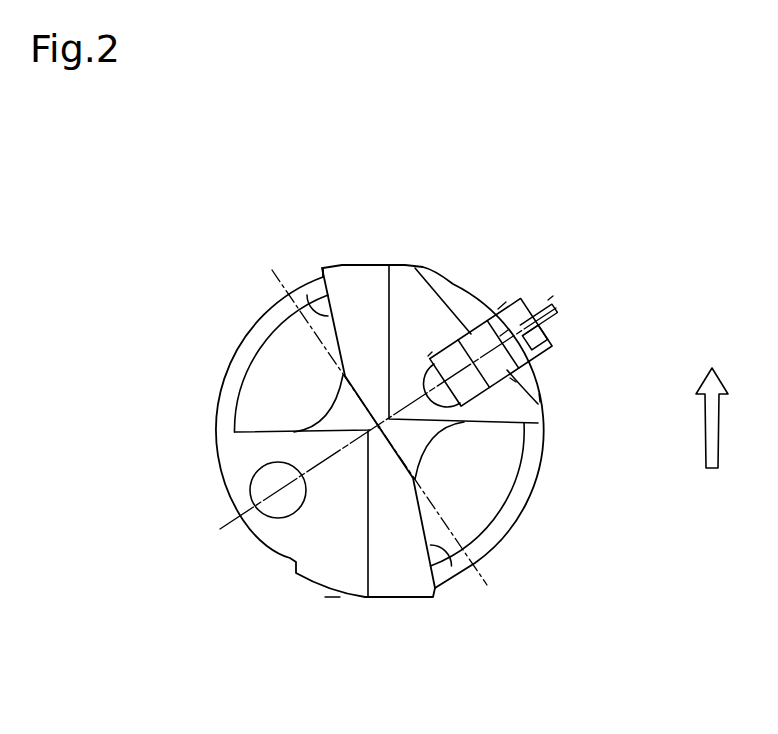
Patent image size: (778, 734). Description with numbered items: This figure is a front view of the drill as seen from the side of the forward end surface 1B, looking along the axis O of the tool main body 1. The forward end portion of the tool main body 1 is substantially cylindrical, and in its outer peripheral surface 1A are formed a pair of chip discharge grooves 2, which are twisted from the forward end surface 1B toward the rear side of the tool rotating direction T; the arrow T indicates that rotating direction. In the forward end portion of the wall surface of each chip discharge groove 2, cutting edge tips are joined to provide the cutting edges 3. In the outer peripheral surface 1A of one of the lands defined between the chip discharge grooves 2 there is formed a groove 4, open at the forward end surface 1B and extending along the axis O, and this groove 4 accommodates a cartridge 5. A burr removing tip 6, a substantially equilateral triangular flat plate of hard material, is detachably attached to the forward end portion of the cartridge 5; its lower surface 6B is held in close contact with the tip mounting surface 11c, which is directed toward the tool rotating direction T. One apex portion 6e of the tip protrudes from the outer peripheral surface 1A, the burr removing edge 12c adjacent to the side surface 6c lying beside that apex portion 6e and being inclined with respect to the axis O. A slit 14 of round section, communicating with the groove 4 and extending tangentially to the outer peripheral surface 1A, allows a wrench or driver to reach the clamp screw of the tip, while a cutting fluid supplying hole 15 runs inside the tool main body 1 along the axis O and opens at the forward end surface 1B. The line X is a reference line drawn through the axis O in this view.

The tool main body 1 is at (211, 292).
The outer peripheral surface 1A is at (556, 398).
The forward end surface 1B is at (331, 603).
The chip discharge grooves 2 is at (270, 384).
The cutting edges 3 is at (322, 268).
The groove 4 is at (518, 384).
The cartridge 5 is at (418, 338).
The burr removing tip 6 is at (559, 322).
The lower surface 6B is at (587, 346).
The side surface 6c is at (592, 312).
The apex portion 6e is at (593, 265).
The tip mounting surface 11c is at (503, 304).
The burr removing edge 12c is at (503, 322).
The slit 14 is at (444, 295).
The cutting fluid supplying hole 15 is at (252, 491).
The axis O is at (380, 428).
The reference line X is at (222, 196).
The tool rotating direction T is at (720, 418).